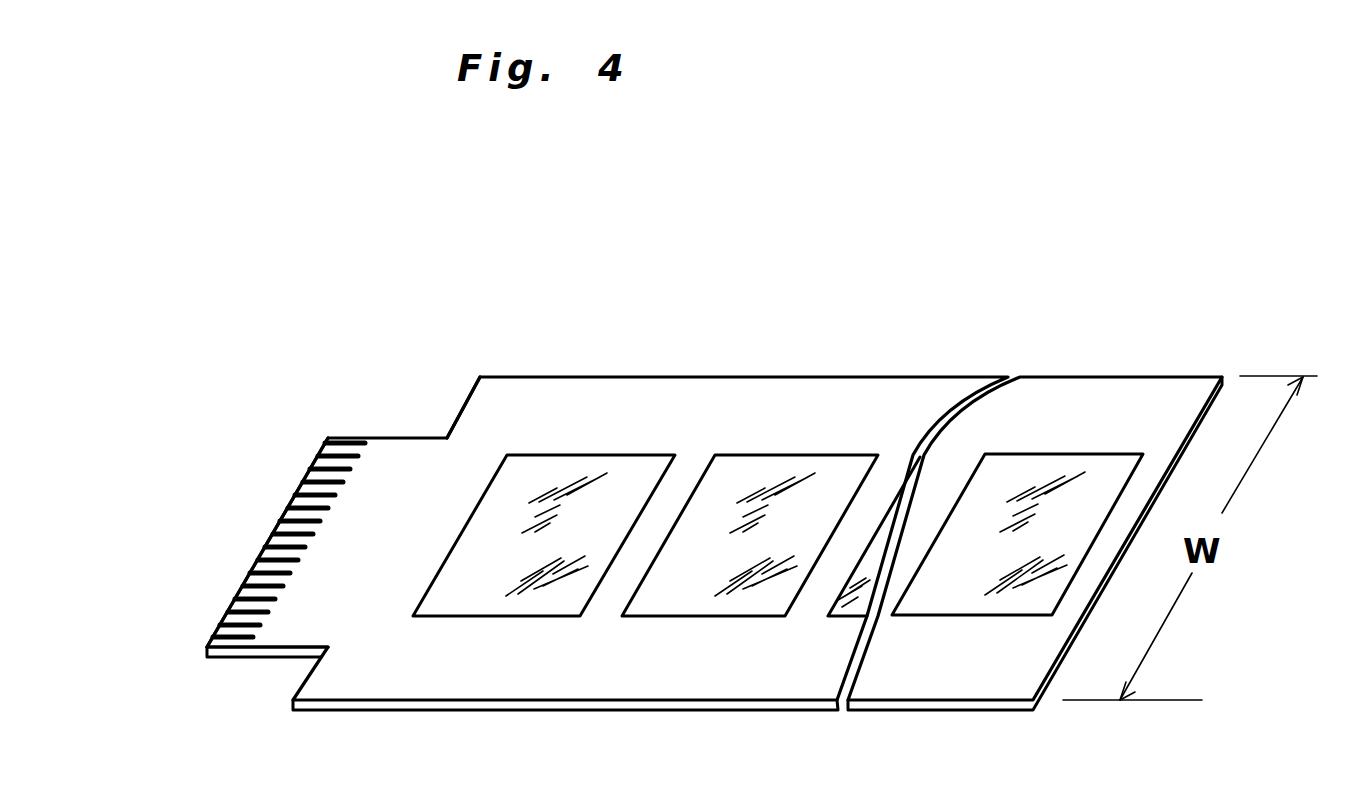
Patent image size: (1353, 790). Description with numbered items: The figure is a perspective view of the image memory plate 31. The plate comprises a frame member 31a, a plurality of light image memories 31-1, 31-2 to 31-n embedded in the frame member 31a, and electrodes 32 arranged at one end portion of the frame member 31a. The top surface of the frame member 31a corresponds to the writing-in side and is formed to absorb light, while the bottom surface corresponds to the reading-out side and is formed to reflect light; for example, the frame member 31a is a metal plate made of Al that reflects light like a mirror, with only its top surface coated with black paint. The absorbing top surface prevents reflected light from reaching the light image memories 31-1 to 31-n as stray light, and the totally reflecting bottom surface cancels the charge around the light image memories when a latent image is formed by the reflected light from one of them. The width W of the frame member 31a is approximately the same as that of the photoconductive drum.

The image memory plate 31 is at (1125, 378).
The frame member 31a is at (492, 417).
The electrodes 32 is at (308, 467).
The light image memory 31-1 is at (582, 465).
The light image memory 31-2 is at (807, 463).
The light image memory 31-n is at (1040, 467).